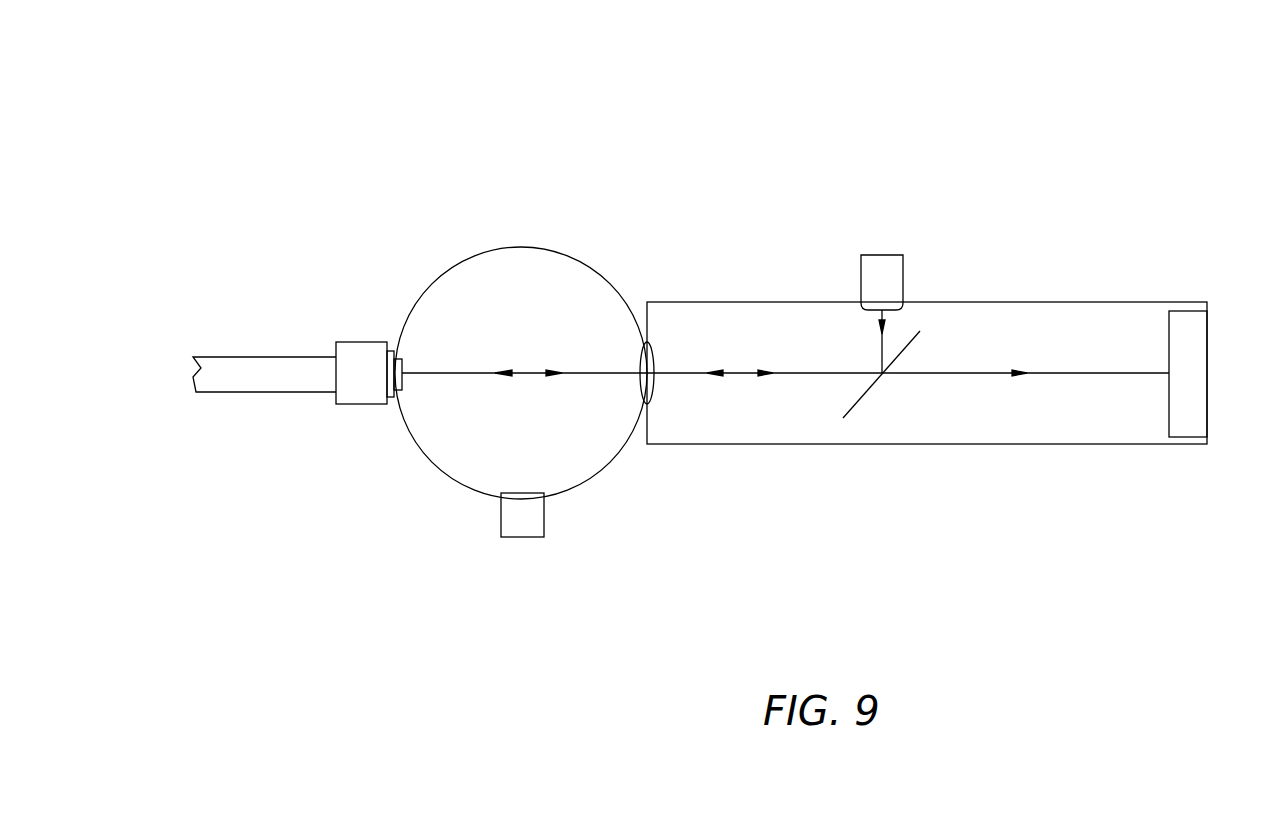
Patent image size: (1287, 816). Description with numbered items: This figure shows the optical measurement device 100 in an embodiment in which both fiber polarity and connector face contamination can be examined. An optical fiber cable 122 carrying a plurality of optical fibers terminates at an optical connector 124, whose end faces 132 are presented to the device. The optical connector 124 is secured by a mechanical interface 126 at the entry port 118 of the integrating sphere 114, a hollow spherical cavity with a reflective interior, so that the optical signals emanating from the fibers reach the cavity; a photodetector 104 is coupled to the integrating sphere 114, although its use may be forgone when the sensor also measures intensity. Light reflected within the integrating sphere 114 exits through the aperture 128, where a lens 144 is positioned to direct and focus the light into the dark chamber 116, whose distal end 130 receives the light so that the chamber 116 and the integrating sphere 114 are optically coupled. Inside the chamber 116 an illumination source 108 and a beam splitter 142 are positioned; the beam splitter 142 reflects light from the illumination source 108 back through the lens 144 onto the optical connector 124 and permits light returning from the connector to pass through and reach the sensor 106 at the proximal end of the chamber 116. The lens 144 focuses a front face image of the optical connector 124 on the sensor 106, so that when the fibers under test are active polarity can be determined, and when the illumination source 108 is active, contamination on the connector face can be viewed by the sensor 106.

The optical measurement device 100 is at (1117, 90).
The photodetector 104 is at (522, 540).
The sensor 106 is at (1187, 420).
The illumination source 108 is at (885, 254).
The integrating sphere 114 is at (523, 246).
The chamber 116 is at (1117, 301).
The entry port 118 is at (406, 366).
The optical fiber cable 122 is at (267, 356).
The optical connector 124 is at (362, 405).
The mechanical interface 126 is at (396, 348).
The aperture 128 is at (637, 393).
The distal end 130 is at (705, 400).
The end faces 132 is at (1167, 452).
The beam splitter 142 is at (887, 380).
The lens 144 is at (650, 392).